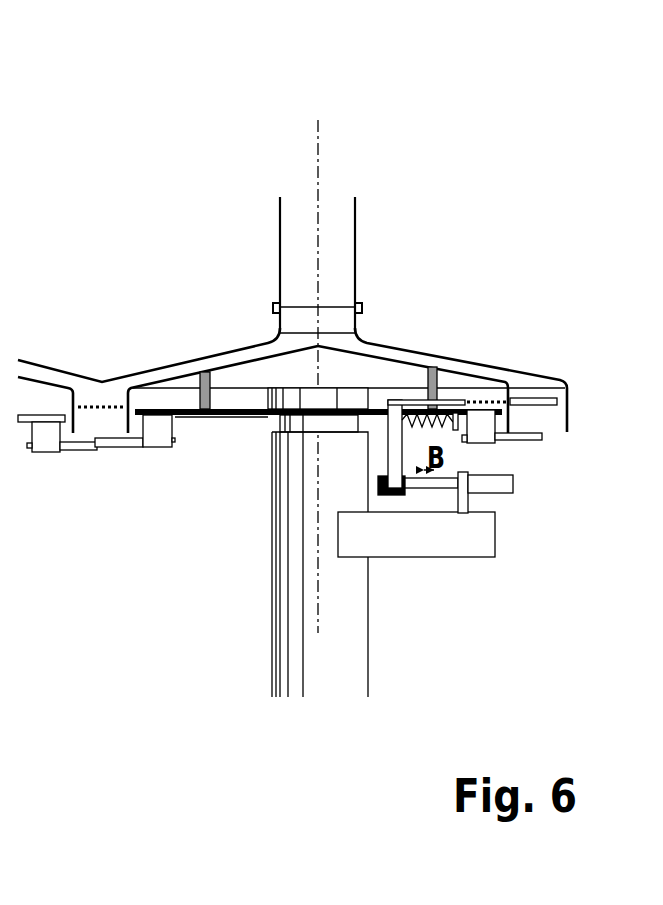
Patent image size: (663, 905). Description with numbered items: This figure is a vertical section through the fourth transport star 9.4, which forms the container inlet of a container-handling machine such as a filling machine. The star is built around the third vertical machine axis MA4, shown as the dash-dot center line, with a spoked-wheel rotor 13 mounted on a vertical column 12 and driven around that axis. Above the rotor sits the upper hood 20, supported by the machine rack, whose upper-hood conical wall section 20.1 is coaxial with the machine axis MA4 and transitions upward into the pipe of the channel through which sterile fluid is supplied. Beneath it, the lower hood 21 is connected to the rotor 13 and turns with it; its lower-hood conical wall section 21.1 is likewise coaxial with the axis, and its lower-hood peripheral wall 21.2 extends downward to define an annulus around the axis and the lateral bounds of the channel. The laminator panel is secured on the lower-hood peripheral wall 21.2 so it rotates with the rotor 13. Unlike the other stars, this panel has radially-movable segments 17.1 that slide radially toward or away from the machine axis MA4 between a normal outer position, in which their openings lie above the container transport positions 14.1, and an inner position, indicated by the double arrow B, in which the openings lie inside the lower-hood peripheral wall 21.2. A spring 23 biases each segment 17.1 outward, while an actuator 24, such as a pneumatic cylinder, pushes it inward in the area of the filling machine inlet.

The fourth transport star 9.4 is at (430, 212).
The third vertical machine axis MA4 is at (366, 373).
The upper hood 20 is at (147, 347).
The upper-hood conical wall section 20.1 is at (207, 350).
The lower hood 21 is at (267, 355).
The lower-hood conical wall section 21.1 is at (262, 360).
The lower-hood peripheral wall 21.2 is at (123, 422).
The rotor 13 is at (255, 420).
The vertical column 12 is at (303, 623).
The radially-movable segment 17.1 is at (408, 400).
The spring 23 is at (402, 418).
The actuator 24 is at (492, 488).
The container transport position 14.1 is at (499, 547).